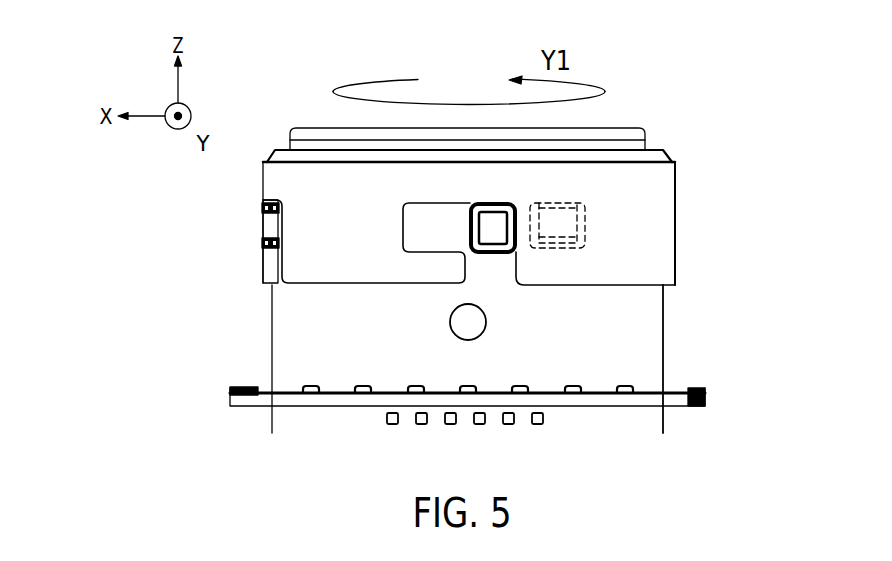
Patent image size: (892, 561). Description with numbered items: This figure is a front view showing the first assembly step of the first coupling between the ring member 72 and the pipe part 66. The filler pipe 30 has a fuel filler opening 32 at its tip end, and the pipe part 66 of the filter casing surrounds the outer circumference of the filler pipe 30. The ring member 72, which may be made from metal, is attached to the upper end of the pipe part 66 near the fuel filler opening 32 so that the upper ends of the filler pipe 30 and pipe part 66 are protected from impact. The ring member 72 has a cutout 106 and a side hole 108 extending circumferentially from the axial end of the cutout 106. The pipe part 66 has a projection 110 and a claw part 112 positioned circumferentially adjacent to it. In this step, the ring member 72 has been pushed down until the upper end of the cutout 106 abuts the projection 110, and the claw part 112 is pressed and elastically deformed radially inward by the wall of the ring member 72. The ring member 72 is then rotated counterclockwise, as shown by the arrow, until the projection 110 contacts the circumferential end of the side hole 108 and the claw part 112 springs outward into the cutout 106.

The filler pipe 30 is at (648, 143).
The fuel filler opening 32 is at (613, 128).
The pipe part 66 is at (663, 350).
The ring member 72 is at (677, 200).
The cutout 106 is at (515, 262).
The side hole 108 is at (403, 222).
The projection 110 is at (490, 205).
The claw part 112 is at (557, 228).